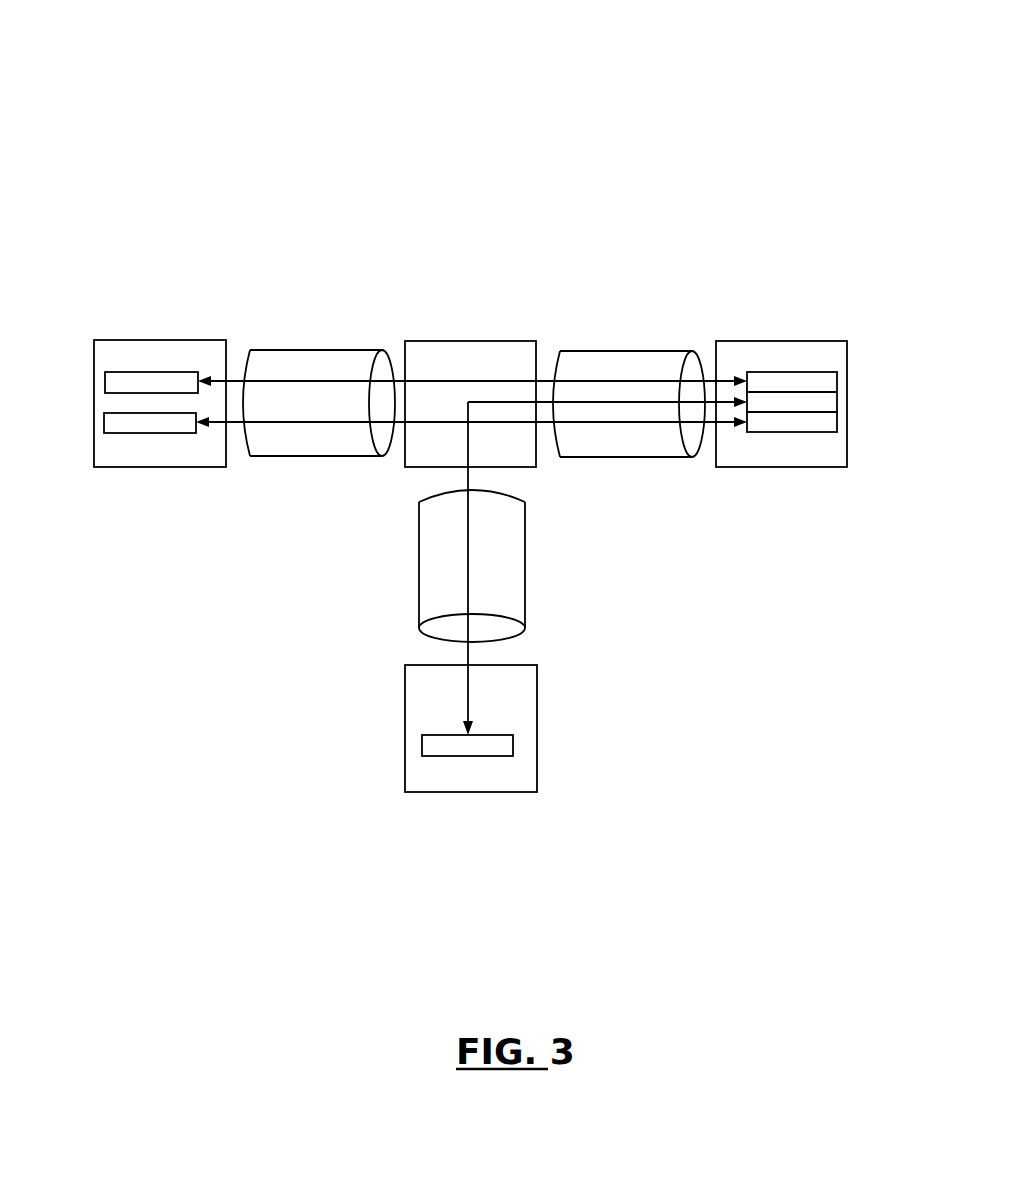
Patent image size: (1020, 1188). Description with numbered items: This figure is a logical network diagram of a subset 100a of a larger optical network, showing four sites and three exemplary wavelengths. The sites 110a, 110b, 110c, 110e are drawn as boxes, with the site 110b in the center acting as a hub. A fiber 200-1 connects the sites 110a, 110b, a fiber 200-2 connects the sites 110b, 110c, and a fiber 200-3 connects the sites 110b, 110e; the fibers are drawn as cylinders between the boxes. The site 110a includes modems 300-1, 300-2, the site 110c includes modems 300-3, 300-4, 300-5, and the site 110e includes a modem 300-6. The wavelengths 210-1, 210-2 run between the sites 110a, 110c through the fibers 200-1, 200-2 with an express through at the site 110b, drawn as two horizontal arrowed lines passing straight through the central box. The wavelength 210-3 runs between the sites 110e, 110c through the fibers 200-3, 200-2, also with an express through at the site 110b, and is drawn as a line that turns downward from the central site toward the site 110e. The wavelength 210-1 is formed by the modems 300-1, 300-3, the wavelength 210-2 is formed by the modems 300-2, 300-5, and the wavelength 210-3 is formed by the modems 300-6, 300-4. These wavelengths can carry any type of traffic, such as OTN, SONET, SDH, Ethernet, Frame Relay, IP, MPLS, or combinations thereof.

The subset of the network 100a is at (568, 58).
The site 110a is at (165, 340).
The site 110b is at (505, 341).
The site 110c is at (793, 341).
The site 110e is at (475, 792).
The fiber 200-1 is at (322, 350).
The fiber 200-2 is at (633, 351).
The fiber 200-3 is at (525, 568).
The wavelength 210-1 is at (423, 381).
The wavelength 210-2 is at (328, 423).
The wavelength 210-3 is at (468, 535).
The modem 300-1 is at (105, 383).
The modem 300-2 is at (104, 423).
The modem 300-3 is at (837, 382).
The modem 300-4 is at (837, 402).
The modem 300-5 is at (837, 422).
The modem 300-6 is at (422, 745).